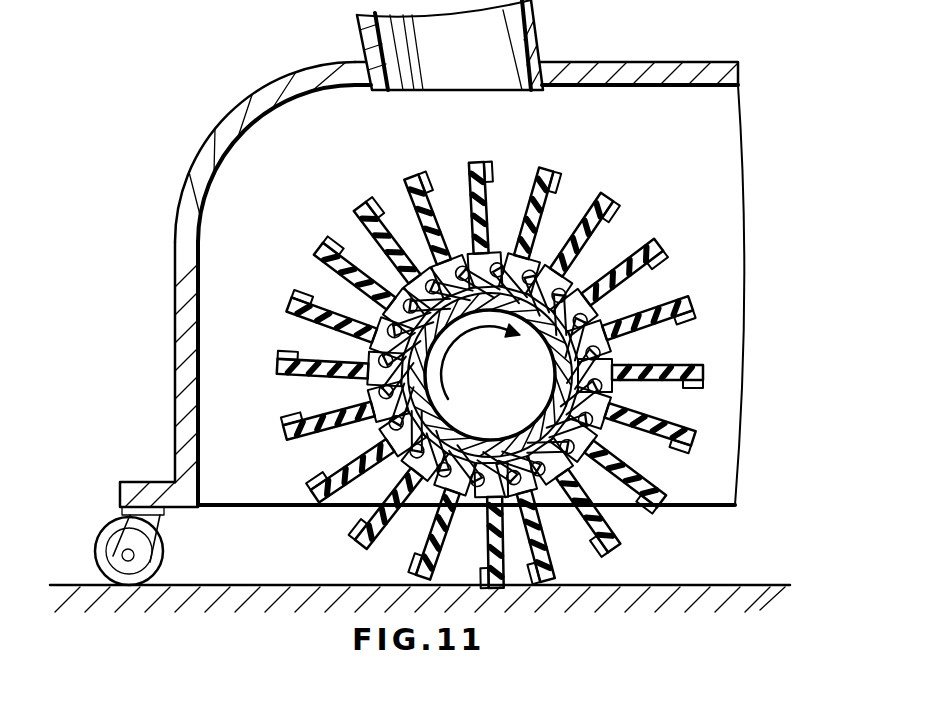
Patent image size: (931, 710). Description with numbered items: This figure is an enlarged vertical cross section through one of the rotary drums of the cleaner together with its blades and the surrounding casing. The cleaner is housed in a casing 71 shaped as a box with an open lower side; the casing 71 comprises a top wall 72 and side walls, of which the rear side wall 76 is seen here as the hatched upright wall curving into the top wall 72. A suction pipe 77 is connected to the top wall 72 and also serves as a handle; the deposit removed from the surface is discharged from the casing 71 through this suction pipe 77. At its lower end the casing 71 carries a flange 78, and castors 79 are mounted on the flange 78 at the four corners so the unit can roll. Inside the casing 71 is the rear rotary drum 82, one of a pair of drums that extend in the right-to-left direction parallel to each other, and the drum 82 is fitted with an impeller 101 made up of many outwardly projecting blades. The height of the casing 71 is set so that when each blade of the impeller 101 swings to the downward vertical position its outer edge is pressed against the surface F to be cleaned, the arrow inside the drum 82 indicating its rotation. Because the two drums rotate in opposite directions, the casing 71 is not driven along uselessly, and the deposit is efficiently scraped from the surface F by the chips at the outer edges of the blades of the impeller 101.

The casing 71 is at (170, 202).
The top wall 72 is at (705, 70).
The rear side wall 76 is at (175, 320).
The suction pipe 77 is at (527, 26).
The flange 78 is at (133, 482).
The castors 79 is at (112, 530).
The rear rotary drum 82 is at (447, 443).
The impeller 101 is at (645, 212).
The surface to be cleaned F is at (750, 583).